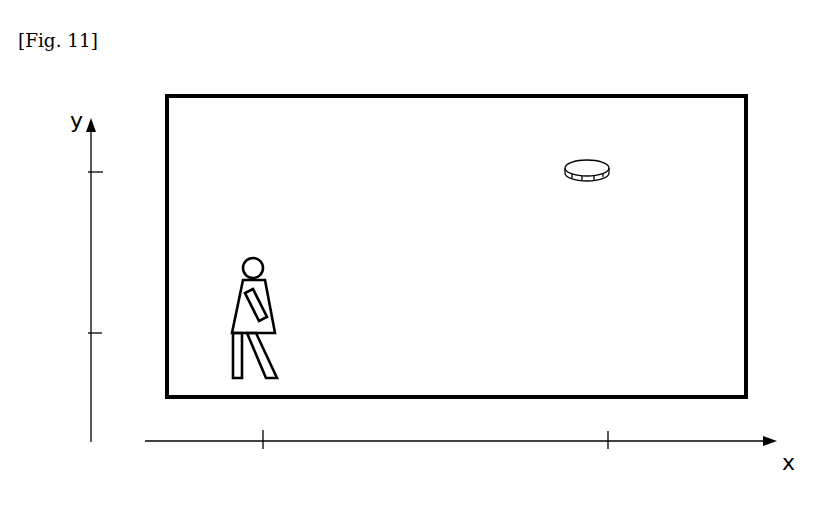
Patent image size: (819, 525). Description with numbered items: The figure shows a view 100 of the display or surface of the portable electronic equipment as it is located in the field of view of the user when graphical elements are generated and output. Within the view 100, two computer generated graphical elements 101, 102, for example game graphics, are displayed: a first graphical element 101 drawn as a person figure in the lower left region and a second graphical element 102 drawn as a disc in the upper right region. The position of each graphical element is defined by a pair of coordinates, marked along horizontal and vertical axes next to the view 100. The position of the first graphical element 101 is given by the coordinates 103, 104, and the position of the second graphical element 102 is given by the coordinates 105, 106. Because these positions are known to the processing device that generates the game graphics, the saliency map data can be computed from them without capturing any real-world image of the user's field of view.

The view 100 is at (165, 112).
The graphical element 101 is at (272, 302).
The graphical element 102 is at (608, 175).
The coordinate 103 is at (263, 449).
The coordinate 104 is at (88, 333).
The coordinate 105 is at (608, 449).
The coordinate 106 is at (88, 172).